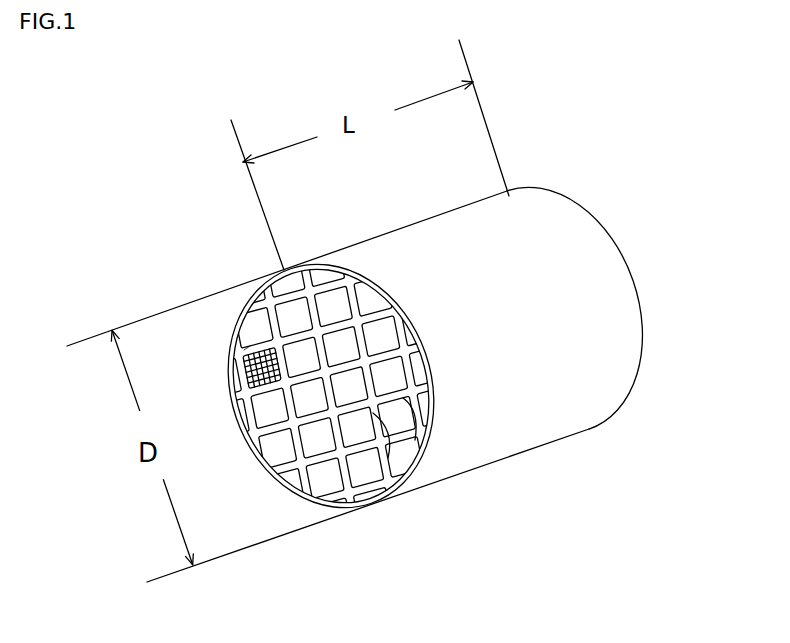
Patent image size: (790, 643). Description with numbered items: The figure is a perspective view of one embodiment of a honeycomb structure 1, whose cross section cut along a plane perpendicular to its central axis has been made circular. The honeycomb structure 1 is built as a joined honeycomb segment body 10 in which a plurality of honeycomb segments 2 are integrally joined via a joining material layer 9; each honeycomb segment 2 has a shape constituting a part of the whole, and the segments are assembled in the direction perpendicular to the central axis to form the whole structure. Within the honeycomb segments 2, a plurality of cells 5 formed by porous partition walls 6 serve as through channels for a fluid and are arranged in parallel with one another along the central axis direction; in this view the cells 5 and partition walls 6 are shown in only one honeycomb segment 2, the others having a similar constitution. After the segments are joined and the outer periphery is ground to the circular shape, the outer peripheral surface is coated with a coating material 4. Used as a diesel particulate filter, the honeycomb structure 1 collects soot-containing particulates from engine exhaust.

The honeycomb structure 1 is at (370, 358).
The joined honeycomb segment body 10 is at (403, 210).
The honeycomb segment 2 is at (272, 408).
The coating material 4 is at (228, 383).
The cell 5 is at (254, 350).
The partition wall 6 is at (250, 343).
The joining material layer 9 is at (403, 398).